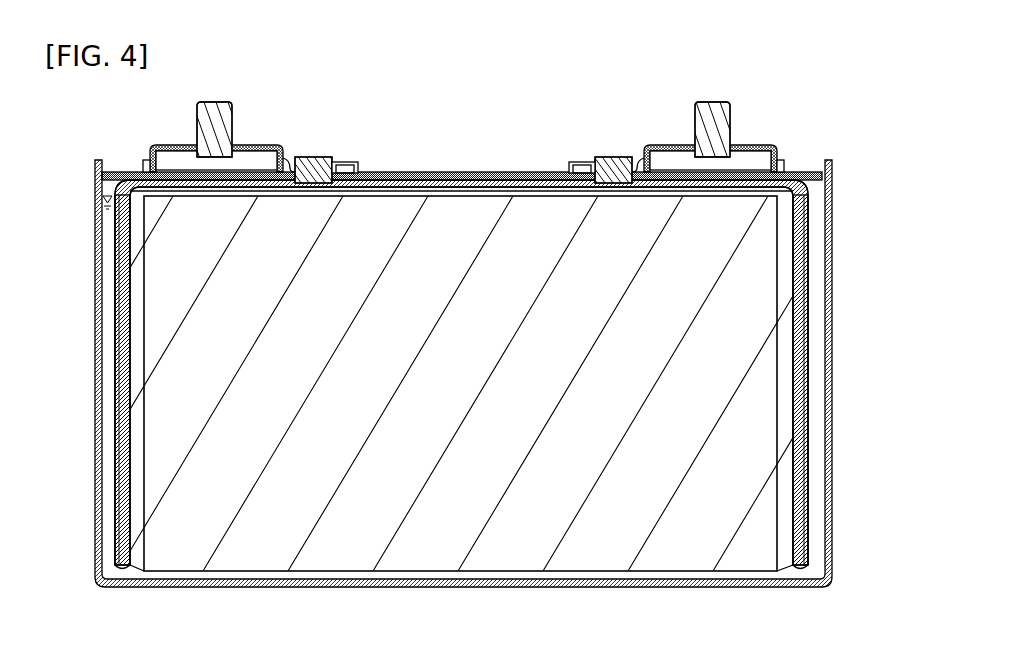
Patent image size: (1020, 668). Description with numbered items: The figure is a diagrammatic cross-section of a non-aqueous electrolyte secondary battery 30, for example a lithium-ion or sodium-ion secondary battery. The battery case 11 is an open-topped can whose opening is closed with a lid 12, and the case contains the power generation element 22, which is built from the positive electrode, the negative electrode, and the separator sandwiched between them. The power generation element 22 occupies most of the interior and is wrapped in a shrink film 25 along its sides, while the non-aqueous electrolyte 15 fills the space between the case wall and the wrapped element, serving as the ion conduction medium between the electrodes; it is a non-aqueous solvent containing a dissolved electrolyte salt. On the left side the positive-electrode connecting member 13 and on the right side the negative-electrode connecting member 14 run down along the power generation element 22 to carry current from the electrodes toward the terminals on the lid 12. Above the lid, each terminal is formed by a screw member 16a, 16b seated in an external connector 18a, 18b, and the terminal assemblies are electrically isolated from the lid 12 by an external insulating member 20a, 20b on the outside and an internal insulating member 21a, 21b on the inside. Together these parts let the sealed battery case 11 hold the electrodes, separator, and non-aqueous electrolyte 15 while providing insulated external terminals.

The battery case 11 is at (827, 348).
The lid 12 is at (430, 170).
The positive-electrode connecting member 13 is at (125, 302).
The negative-electrode connecting member 14 is at (800, 294).
The non-aqueous electrolyte 15 is at (108, 222).
The screw member 16a is at (210, 140).
The screw member 16b is at (722, 134).
The external connector 18a is at (240, 150).
The external connector 18b is at (686, 152).
The external insulating member 20a is at (292, 167).
The external insulating member 20b is at (632, 166).
The internal insulating member 21a is at (342, 166).
The internal insulating member 21b is at (565, 166).
The power generation element 22 is at (752, 410).
The shrink film 25 is at (120, 372).
The non-aqueous electrolyte secondary battery 30 is at (840, 126).